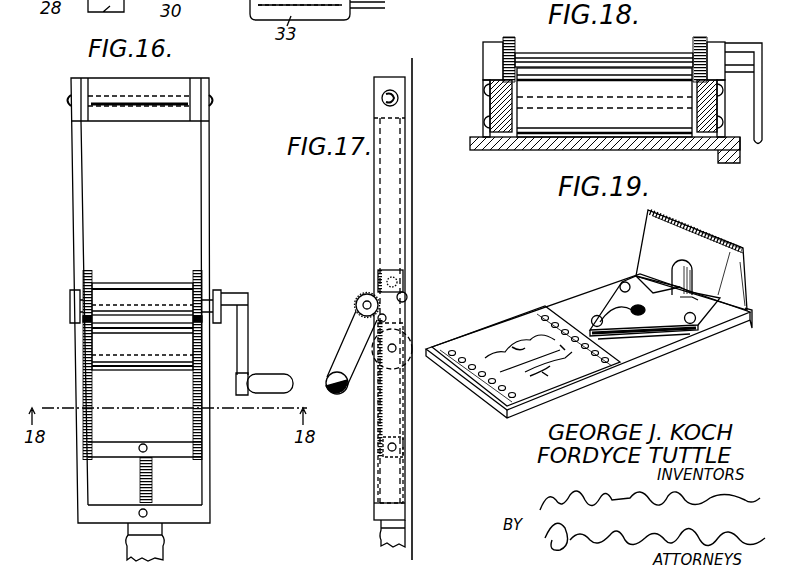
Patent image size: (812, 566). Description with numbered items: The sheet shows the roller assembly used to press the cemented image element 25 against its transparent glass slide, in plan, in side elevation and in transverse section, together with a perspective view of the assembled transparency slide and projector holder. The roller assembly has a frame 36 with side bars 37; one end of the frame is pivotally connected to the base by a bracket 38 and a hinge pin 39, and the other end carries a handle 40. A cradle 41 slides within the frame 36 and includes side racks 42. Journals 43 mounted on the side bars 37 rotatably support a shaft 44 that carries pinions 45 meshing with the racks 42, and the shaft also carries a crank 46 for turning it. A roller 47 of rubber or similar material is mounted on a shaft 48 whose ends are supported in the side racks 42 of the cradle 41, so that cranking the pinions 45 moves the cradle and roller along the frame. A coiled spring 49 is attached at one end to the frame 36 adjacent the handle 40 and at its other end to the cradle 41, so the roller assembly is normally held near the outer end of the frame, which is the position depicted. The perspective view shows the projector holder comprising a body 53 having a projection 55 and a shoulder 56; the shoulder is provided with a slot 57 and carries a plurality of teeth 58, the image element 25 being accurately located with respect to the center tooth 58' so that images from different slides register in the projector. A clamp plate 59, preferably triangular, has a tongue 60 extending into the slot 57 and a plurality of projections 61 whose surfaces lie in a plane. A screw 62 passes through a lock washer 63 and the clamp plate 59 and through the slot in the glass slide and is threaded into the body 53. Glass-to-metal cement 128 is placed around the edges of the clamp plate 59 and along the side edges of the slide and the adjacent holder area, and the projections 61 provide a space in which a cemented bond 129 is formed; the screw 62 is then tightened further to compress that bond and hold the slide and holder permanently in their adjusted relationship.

In FIG. 19, the image element 25 is at (486, 334).
In FIG. 16, the frame 36 is at (210, 138).
In FIG. 16, the side bars 37 is at (74, 186).
In FIG. 17, the side bars 37 is at (405, 229).
In FIG. 18, the side bars 37 is at (495, 133).
In FIG. 16, the bracket 38 is at (139, 118).
In FIG. 16, the hinge pin 39 is at (112, 100).
In FIG. 17, the hinge pin 39 is at (383, 97).
In FIG. 16, the handle 40 is at (162, 545).
In FIG. 17, the handle 40 is at (380, 544).
In FIG. 16, the cradle 41 is at (129, 444).
In FIG. 17, the cradle 41 is at (386, 453).
In FIG. 16, the side racks 42 is at (88, 273).
In FIG. 17, the side racks 42 is at (380, 412).
In FIG. 18, the side racks 42 is at (490, 100).
In FIG. 16, the journals 43 is at (80, 292).
In FIG. 17, the journals 43 is at (403, 305).
In FIG. 18, the journals 43 is at (489, 53).
In FIG. 16, the shaft 44 is at (153, 305).
In FIG. 17, the shaft 44 is at (362, 296).
In FIG. 18, the shaft 44 is at (608, 56).
In FIG. 16, the pinions 45 is at (84, 322).
In FIG. 17, the pinions 45 is at (356, 306).
In FIG. 18, the pinions 45 is at (508, 37).
In FIG. 16, the crank 46 is at (243, 346).
In FIG. 17, the crank 46 is at (343, 341).
In FIG. 18, the crank 46 is at (762, 90).
In FIG. 16, the roller 47 is at (137, 365).
In FIG. 18, the roller 47 is at (540, 122).
In FIG. 17, the shaft 48 is at (396, 352).
In FIG. 18, the shaft 48 is at (632, 97).
In FIG. 16, the coiled spring 49 is at (153, 480).
In FIG. 19, the body 53 is at (720, 330).
In FIG. 19, the projection 55 is at (750, 312).
In FIG. 19, the shoulder 56 is at (646, 240).
In FIG. 19, the slot 57 is at (692, 273).
In FIG. 19, the teeth 58 is at (695, 220).
In FIG. 19, the center tooth 58' is at (721, 221).
In FIG. 19, the clamp plate 59 is at (606, 302).
In FIG. 19, the tongue 60 is at (697, 285).
In FIG. 19, the projections 61 is at (592, 318).
In FIG. 19, the screw 62 is at (638, 304).
In FIG. 19, the lock washer 63 is at (632, 308).
In FIG. 19, the cement 128 is at (645, 340).
In FIG. 19, the cemented bond 129 is at (680, 340).